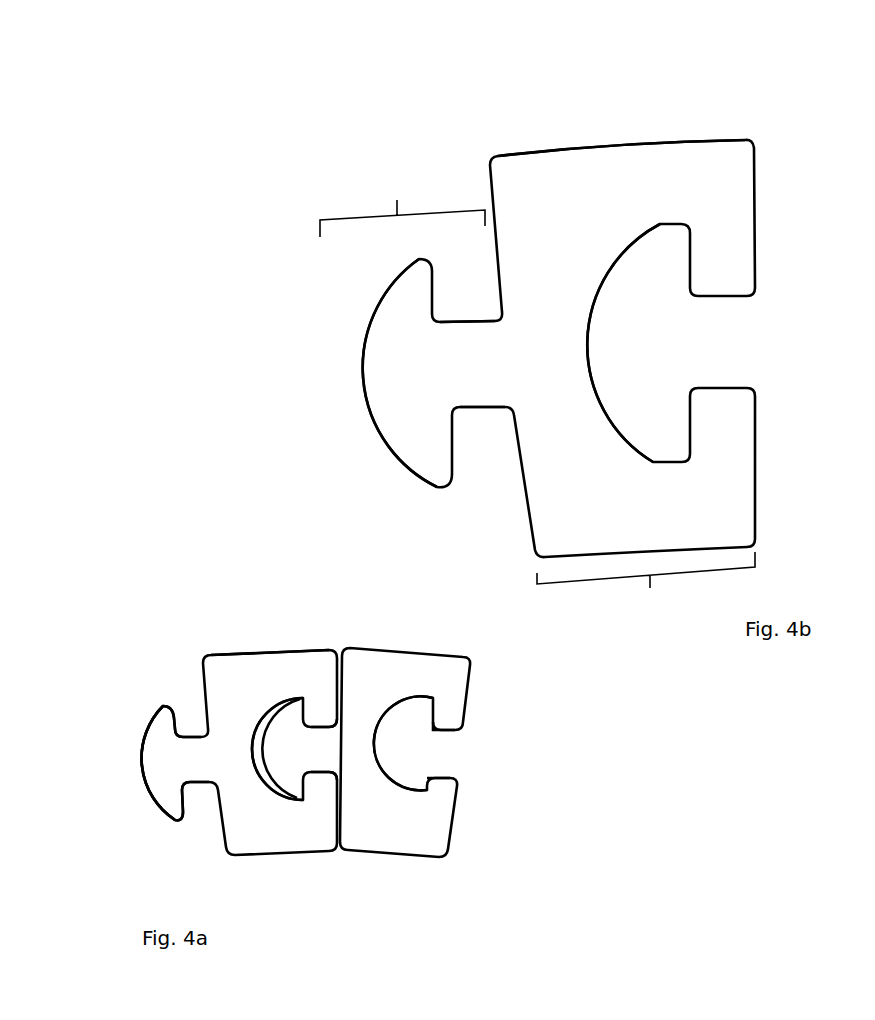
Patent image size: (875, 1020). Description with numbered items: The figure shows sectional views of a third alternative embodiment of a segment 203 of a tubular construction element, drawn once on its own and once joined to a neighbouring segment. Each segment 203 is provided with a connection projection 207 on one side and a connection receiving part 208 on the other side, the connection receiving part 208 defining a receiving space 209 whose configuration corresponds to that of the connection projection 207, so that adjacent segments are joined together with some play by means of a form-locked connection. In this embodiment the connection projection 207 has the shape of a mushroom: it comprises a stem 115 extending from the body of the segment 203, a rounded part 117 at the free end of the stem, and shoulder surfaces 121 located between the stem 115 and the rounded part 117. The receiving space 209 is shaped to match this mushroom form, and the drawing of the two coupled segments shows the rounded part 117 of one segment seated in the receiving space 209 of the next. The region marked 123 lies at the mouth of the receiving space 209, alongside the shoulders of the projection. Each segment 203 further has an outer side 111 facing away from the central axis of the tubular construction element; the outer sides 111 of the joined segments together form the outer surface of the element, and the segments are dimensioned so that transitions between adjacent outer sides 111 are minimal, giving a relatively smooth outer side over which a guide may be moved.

In FIG. 4B, the outer side 111 is at (633, 138).
In FIG. 4A, the outer side 111 is at (218, 652).
In FIG. 4B, the stem 115 is at (458, 385).
In FIG. 4A, the stem 115 is at (320, 745).
In FIG. 4B, the rounded part 117 is at (360, 363).
In FIG. 4A, the rounded part 117 is at (143, 733).
In FIG. 4A, the shoulder surfaces 121 is at (174, 710).
In FIG. 4A, the socket shoulders 123 is at (420, 748).
In FIG. 4B, the segment 203 is at (767, 108).
In FIG. 4A, the segment 203 is at (403, 648).
In FIG. 4B, the connection projection 207 is at (402, 204).
In FIG. 4A, the connection projection 207 is at (153, 712).
In FIG. 4B, the connection receiving part 208 is at (646, 587).
In FIG. 4B, the receiving space 209 is at (742, 341).
In FIG. 4A, the receiving space 209 is at (263, 693).